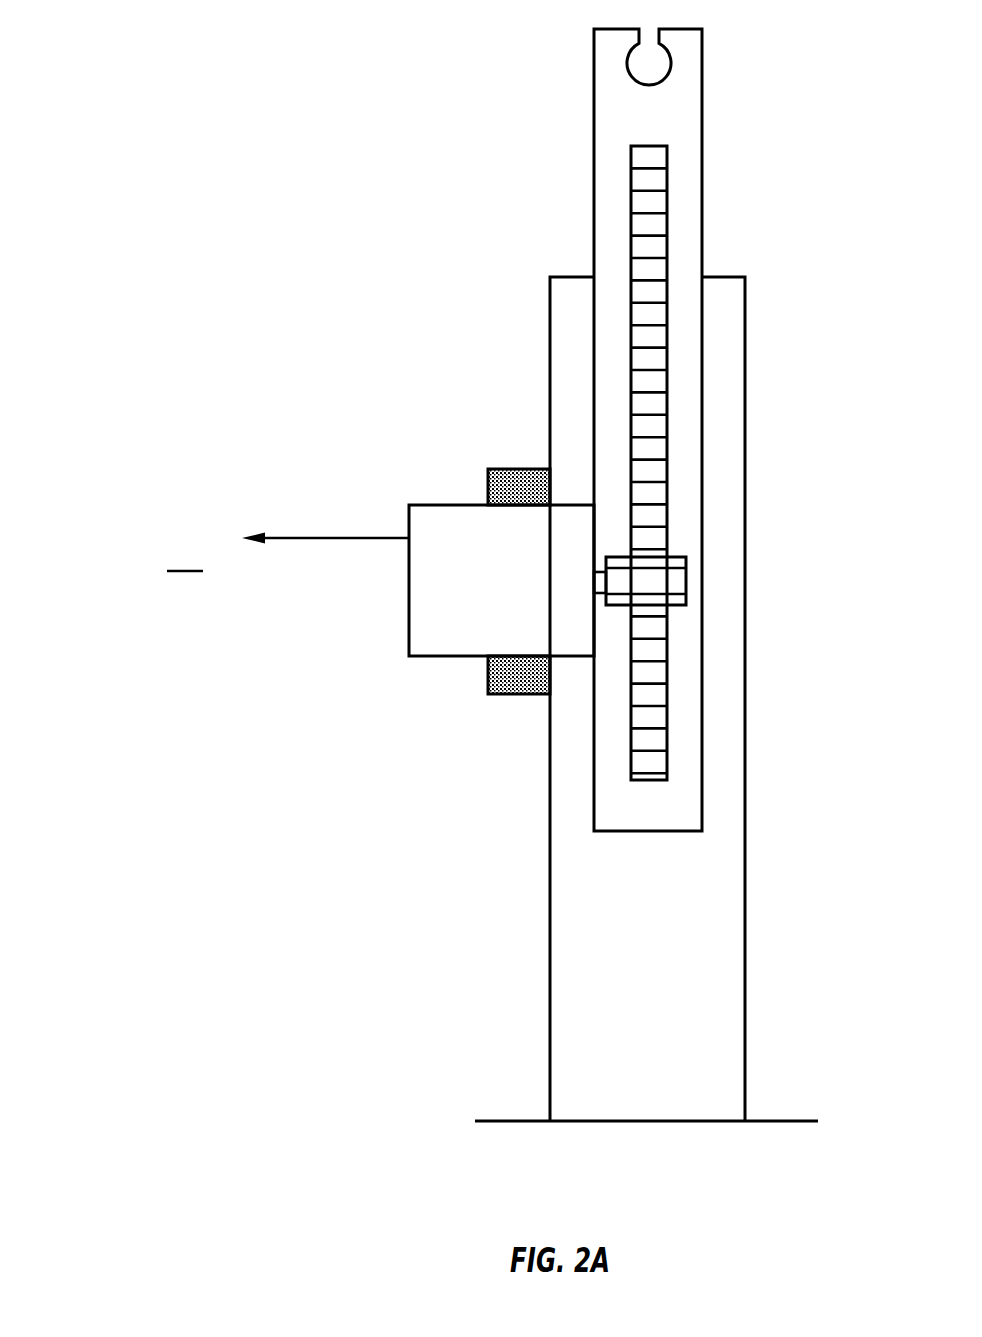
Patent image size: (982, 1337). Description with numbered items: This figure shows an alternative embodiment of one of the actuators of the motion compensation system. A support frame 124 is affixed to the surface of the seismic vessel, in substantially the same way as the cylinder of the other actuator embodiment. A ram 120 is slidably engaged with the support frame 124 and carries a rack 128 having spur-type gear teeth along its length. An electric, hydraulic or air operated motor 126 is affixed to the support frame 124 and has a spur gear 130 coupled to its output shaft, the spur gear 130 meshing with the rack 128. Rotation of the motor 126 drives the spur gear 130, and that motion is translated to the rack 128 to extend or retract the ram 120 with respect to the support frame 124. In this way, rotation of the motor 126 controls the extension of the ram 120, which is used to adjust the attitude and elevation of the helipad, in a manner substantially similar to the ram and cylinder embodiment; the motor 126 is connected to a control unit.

The ram 120 is at (693, 103).
The support frame 124 is at (550, 815).
The motor 126 is at (409, 582).
The rack 128 is at (668, 193).
The spur gear 130 is at (686, 598).